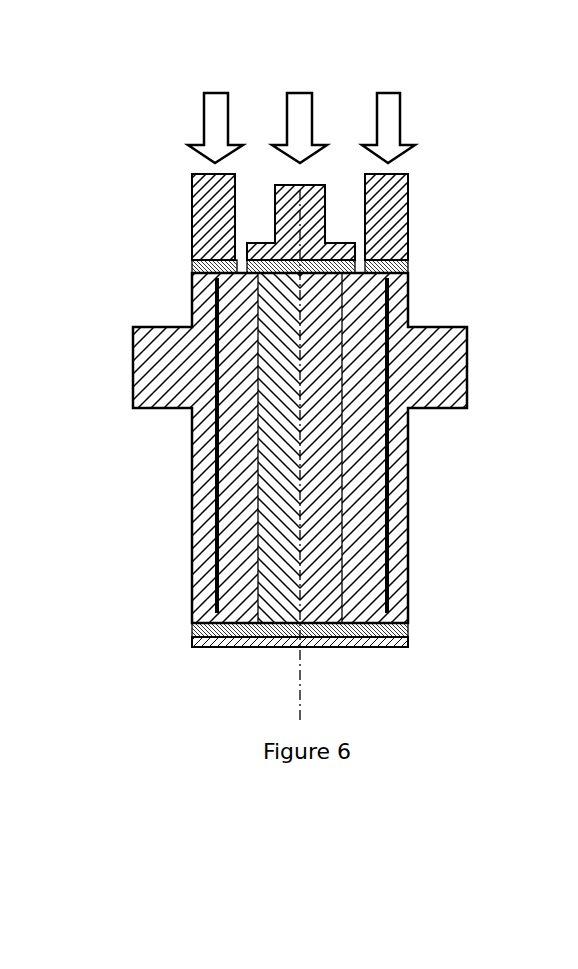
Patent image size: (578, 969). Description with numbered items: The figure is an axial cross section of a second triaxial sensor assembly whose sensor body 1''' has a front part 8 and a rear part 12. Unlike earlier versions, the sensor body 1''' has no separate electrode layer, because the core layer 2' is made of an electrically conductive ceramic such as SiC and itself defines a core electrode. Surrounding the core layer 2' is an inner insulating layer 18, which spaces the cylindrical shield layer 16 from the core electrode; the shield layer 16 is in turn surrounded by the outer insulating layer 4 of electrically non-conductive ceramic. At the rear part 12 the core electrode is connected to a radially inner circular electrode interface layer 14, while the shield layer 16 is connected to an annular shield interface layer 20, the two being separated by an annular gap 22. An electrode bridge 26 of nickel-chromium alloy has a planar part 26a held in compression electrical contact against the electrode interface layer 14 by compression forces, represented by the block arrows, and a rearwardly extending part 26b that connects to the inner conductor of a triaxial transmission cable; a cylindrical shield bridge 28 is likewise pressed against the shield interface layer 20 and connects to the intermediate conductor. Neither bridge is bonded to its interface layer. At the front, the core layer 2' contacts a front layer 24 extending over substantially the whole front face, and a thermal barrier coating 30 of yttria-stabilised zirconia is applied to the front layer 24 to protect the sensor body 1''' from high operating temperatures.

The sensor body 1''' is at (277, 419).
The core layer 2' is at (228, 448).
The outer insulating layer 4 is at (409, 298).
The front part 8 is at (218, 684).
The rear part 12 is at (430, 270).
The electrode interface layer 14 is at (240, 245).
The shield layer 16 is at (387, 455).
The inner insulating layer 18 is at (363, 582).
The shield interface layer 20 is at (193, 265).
The annular gap 22 is at (258, 238).
The front layer 24 is at (373, 630).
The electrode bridge 26 is at (295, 210).
The planar part 26a is at (410, 218).
The rearwardly extending part 26b is at (327, 210).
The shield bridge 28 is at (192, 196).
The thermal barrier coating 30 is at (236, 647).